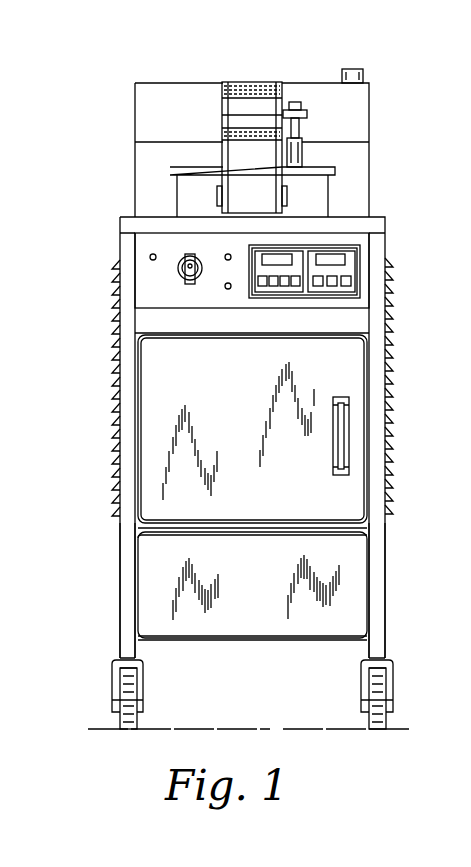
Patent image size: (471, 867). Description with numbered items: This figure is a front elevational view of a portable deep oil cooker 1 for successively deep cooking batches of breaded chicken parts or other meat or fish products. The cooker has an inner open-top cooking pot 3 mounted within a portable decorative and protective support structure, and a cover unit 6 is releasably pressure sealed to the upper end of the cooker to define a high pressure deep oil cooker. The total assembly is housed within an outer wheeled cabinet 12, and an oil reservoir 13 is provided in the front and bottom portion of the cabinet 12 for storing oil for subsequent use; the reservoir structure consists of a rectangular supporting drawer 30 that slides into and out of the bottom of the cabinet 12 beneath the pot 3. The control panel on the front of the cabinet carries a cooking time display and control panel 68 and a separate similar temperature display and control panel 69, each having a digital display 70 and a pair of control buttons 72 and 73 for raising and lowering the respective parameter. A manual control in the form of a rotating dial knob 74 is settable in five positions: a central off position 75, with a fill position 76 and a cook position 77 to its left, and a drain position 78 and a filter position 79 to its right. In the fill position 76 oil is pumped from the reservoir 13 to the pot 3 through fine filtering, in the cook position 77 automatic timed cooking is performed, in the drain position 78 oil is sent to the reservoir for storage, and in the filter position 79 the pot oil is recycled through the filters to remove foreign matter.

The portable deep oil cooker 1 is at (382, 204).
The cooking pot 3 is at (320, 188).
The cover unit 6 is at (348, 164).
The wheeled cabinet 12 is at (387, 512).
The oil reservoir 13 is at (251, 640).
The supporting drawer 30 is at (270, 608).
The cooking time display and control panel 68 is at (259, 307).
The temperature display and control panel 69 is at (331, 307).
The digital display 70 is at (328, 252).
The control button 72 is at (347, 265).
The control button 73 is at (292, 291).
The rotating dial knob 74 is at (190, 286).
The off position 75 is at (200, 250).
The fill position 76 is at (182, 290).
The cook position 77 is at (185, 256).
The drain position 78 is at (207, 258).
The filter position 79 is at (210, 297).